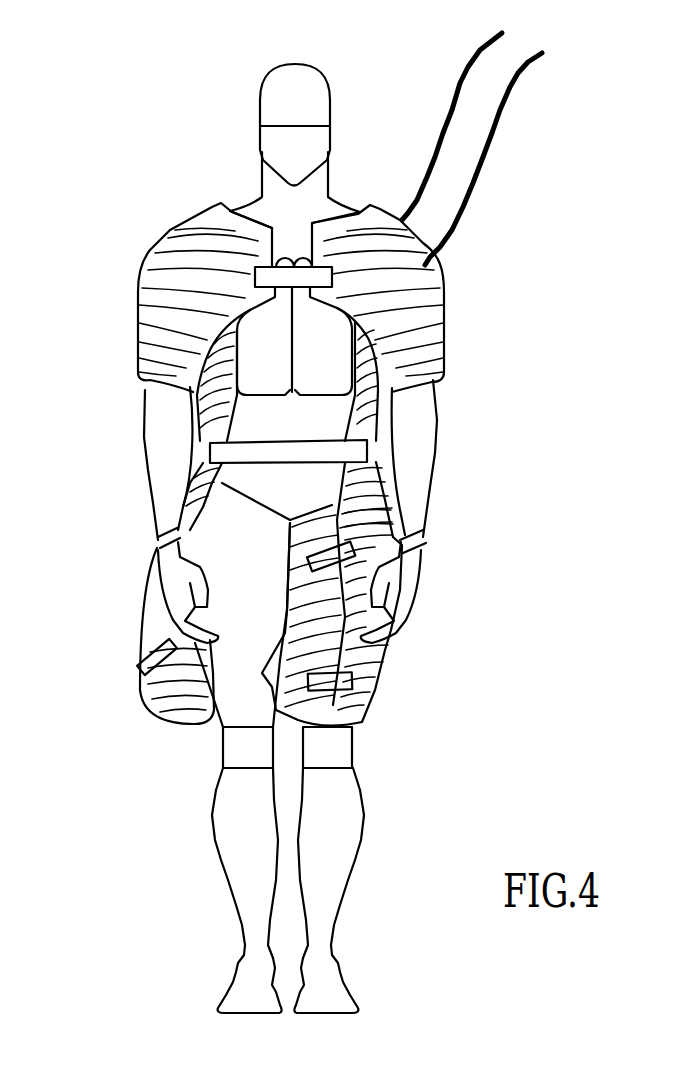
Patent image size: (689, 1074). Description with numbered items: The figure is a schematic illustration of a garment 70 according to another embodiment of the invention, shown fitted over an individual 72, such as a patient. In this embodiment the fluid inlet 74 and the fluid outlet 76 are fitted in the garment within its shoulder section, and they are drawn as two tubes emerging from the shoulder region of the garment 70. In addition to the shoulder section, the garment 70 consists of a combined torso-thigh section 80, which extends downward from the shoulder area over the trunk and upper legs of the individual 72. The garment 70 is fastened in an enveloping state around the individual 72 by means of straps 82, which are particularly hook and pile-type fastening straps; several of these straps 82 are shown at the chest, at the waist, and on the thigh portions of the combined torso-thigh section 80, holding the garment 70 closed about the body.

The garment 70 is at (446, 297).
The individual 72 is at (265, 210).
The fluid inlet 74 is at (457, 92).
The fluid outlet 76 is at (492, 135).
The combined torso-thigh section 80 is at (385, 668).
The straps 82 is at (255, 273).